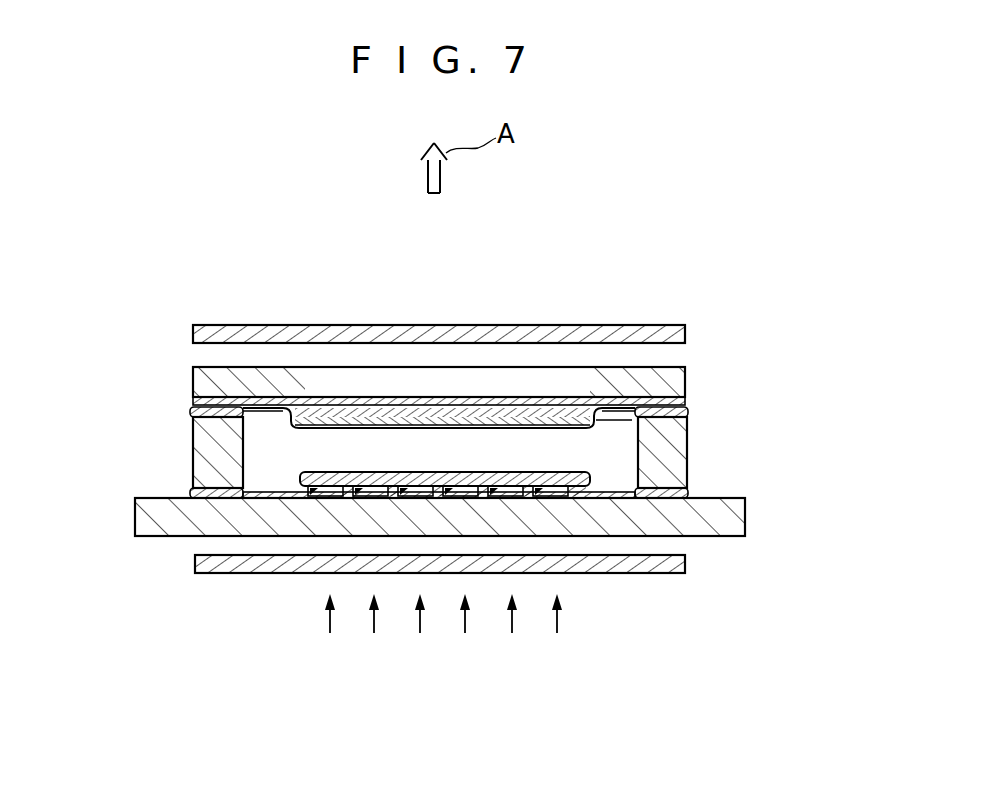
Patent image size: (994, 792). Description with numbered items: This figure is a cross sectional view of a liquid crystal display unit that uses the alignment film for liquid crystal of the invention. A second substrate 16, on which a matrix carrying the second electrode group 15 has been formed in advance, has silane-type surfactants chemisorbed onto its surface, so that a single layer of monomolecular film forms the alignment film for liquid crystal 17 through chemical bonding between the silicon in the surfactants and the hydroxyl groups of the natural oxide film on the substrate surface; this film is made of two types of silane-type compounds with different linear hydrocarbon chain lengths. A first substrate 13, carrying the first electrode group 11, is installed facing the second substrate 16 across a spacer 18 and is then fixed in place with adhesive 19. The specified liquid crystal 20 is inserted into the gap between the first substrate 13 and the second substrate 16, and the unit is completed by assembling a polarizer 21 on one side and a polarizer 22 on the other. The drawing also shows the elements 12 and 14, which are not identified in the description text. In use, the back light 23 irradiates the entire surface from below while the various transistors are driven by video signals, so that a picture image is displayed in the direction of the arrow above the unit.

The first electrode group 11 is at (600, 478).
The thin film transistor pixel elements 12 is at (555, 492).
The first substrate 13 is at (745, 514).
The color filter layer 14 is at (331, 388).
The second electrode group 15 is at (193, 403).
The second substrate 16 is at (193, 378).
The alignment film for liquid crystal 17 is at (597, 400).
The spacer 18 is at (200, 462).
The adhesive 19 is at (193, 417).
The liquid crystal 20 is at (615, 423).
The polarizer 21 is at (195, 563).
The polarizer 22 is at (668, 325).
The back light 23 is at (558, 623).